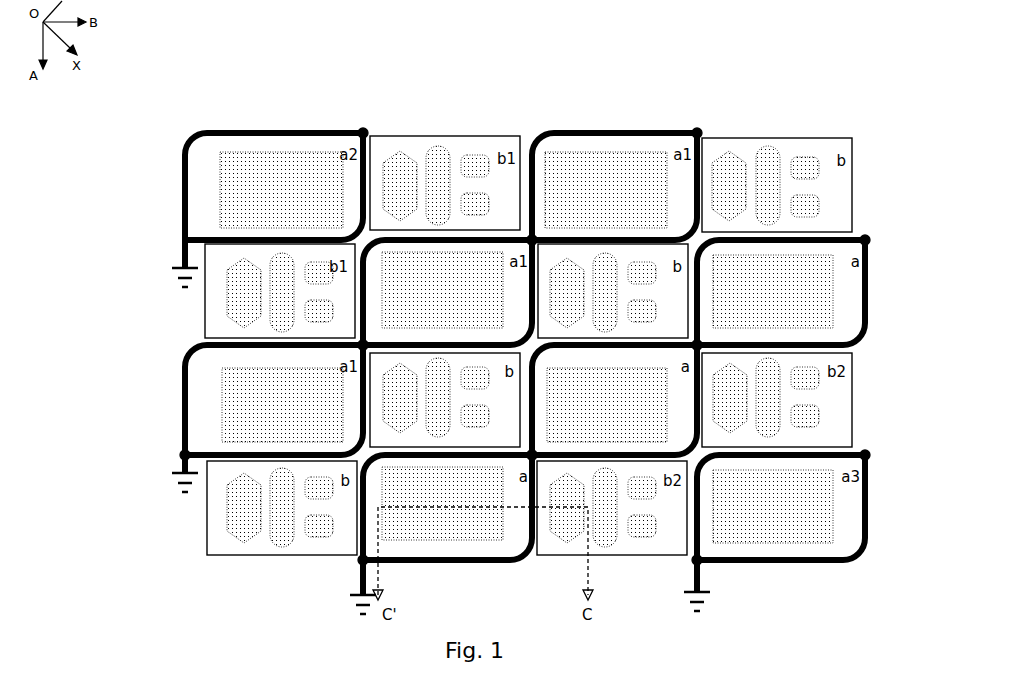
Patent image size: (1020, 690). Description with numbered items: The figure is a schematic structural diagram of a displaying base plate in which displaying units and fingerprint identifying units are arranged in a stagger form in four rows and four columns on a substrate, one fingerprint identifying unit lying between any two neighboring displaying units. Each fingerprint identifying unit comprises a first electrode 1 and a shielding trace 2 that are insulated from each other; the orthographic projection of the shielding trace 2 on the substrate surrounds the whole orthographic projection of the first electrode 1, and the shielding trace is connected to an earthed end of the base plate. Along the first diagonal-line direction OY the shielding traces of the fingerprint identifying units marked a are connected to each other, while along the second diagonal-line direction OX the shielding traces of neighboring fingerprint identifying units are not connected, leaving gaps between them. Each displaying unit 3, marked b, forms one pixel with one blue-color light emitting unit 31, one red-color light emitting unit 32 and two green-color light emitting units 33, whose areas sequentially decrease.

The first electrode 1 is at (605, 153).
The shielding trace 2 is at (569, 131).
The sub-pixel unit 3 is at (853, 138).
The blue-color light emitting unit 31 is at (725, 172).
The red-color light emitting unit 32 is at (762, 172).
The green-color light emitting units 33 is at (800, 167).